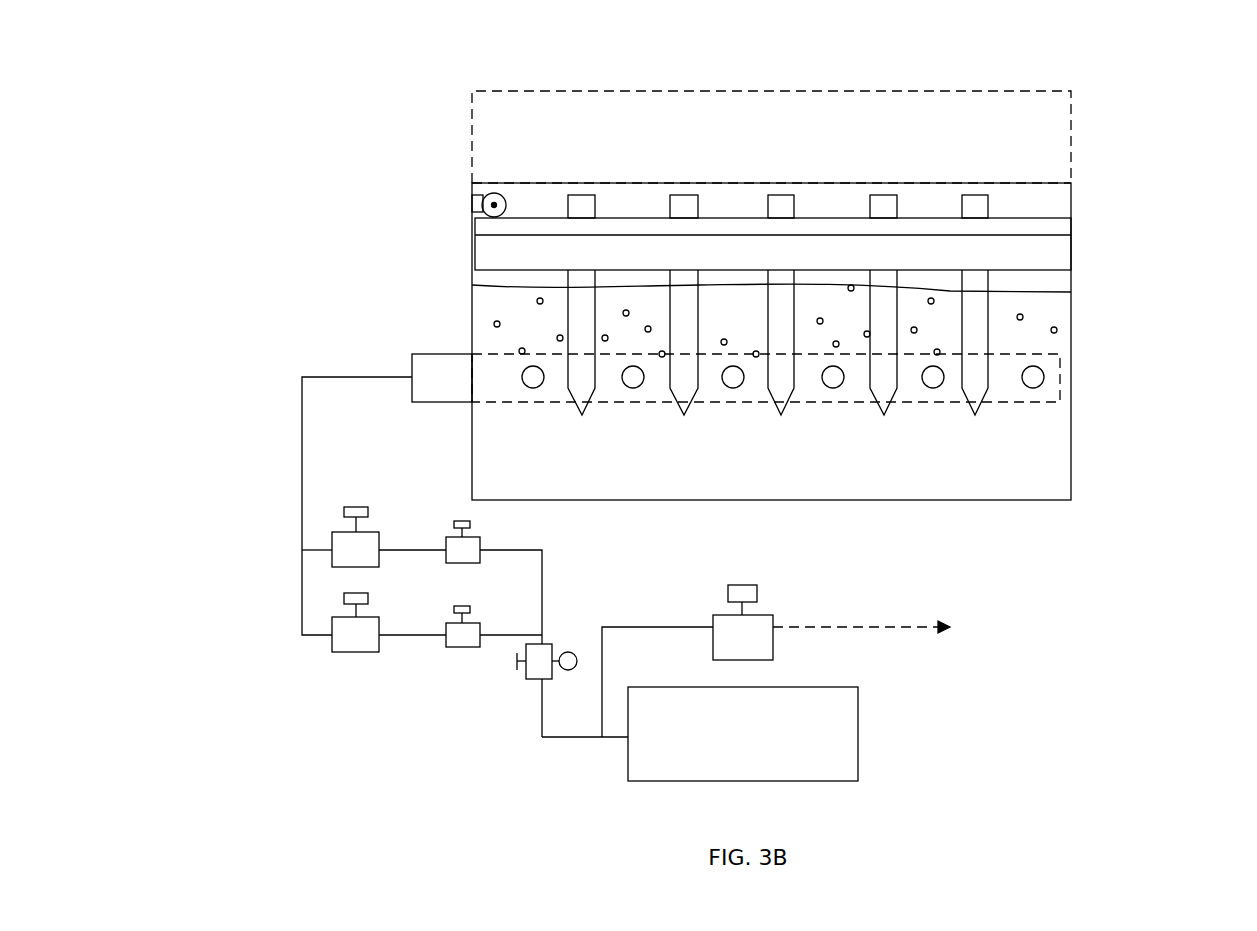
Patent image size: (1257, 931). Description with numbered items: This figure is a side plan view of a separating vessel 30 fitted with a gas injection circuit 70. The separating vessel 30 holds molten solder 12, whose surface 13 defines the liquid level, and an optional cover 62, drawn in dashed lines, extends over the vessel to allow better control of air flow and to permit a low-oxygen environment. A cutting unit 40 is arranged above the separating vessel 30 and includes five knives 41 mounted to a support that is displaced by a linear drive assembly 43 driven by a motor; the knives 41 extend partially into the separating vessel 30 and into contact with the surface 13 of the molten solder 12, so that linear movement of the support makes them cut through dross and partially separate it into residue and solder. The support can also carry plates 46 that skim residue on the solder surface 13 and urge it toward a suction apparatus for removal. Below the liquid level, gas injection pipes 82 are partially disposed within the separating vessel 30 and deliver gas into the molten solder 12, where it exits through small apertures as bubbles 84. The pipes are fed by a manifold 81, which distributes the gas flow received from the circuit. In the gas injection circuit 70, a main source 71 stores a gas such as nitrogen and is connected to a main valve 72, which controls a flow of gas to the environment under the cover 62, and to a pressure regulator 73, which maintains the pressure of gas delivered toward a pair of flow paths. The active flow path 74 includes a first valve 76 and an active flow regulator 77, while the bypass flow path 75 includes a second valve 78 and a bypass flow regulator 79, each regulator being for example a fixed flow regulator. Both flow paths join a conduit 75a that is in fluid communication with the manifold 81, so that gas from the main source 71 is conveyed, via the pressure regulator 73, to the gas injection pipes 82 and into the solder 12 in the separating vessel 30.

The separating vessel 30 is at (1187, 84).
The cover 62 is at (1052, 91).
The cutting unit 40 is at (1068, 216).
The plate 46 is at (1058, 254).
The knife 41 is at (690, 198).
The linear drive assembly 43 is at (492, 195).
The surface 13 is at (1056, 290).
The bubble 84 is at (537, 301).
The molten solder 12 is at (718, 331).
The gas injection pipe 82 is at (633, 388).
The manifold 81 is at (423, 354).
The conduit 75a is at (302, 498).
The active flow path 74 is at (312, 548).
The bypass flow path 75 is at (302, 610).
The active flow regulator 77 is at (370, 548).
The first valve 76 is at (468, 548).
The bypass flow regulator 79 is at (343, 643).
The second valve 78 is at (458, 643).
The pressure regulator 73 is at (545, 648).
The main valve 72 is at (762, 625).
The main source 71 is at (721, 744).
The gas injection circuit 70 is at (250, 752).